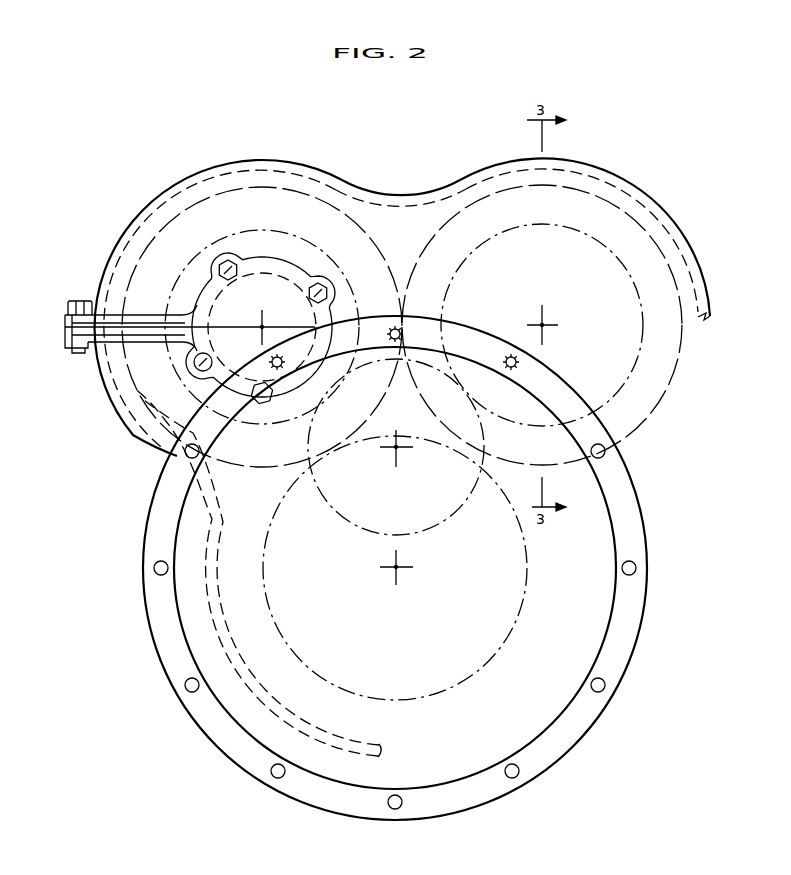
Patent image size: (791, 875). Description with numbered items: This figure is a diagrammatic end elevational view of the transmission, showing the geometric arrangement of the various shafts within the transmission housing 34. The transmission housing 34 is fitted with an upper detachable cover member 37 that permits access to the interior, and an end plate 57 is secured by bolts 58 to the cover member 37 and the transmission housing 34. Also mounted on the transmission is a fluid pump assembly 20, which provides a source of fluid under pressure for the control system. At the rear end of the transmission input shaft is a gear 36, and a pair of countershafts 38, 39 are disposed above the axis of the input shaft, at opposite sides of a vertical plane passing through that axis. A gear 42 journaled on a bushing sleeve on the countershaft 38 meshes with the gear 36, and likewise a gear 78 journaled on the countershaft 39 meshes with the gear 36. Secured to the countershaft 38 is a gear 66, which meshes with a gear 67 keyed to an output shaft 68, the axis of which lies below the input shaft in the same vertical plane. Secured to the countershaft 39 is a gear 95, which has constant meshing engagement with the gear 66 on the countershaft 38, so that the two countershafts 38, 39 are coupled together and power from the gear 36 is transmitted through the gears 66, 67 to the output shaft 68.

The fluid pump assembly 20 is at (398, 450).
The transmission housing 34 is at (65, 333).
The gear 36 is at (457, 513).
The cover member 37 is at (65, 318).
The countershaft 38 is at (258, 325).
The countershaft 39 is at (545, 328).
The gear 42 is at (262, 404).
The end plate 57 is at (200, 293).
The bolts 58 is at (318, 283).
The gear 66 is at (255, 472).
The gear 67 is at (490, 662).
The output shaft 68 is at (398, 570).
The gear 78 is at (637, 366).
The gear 95 is at (647, 417).